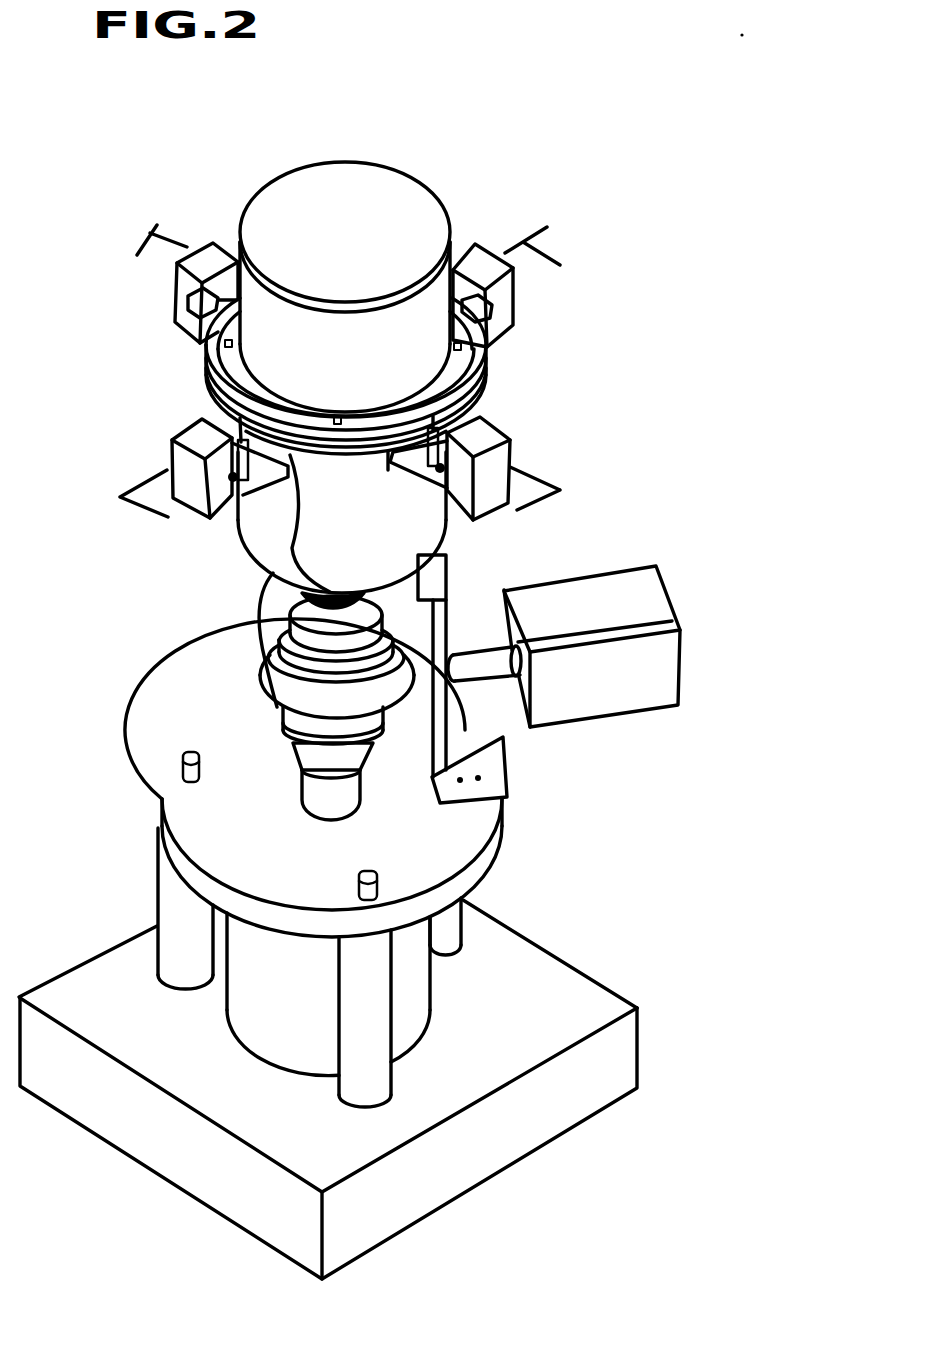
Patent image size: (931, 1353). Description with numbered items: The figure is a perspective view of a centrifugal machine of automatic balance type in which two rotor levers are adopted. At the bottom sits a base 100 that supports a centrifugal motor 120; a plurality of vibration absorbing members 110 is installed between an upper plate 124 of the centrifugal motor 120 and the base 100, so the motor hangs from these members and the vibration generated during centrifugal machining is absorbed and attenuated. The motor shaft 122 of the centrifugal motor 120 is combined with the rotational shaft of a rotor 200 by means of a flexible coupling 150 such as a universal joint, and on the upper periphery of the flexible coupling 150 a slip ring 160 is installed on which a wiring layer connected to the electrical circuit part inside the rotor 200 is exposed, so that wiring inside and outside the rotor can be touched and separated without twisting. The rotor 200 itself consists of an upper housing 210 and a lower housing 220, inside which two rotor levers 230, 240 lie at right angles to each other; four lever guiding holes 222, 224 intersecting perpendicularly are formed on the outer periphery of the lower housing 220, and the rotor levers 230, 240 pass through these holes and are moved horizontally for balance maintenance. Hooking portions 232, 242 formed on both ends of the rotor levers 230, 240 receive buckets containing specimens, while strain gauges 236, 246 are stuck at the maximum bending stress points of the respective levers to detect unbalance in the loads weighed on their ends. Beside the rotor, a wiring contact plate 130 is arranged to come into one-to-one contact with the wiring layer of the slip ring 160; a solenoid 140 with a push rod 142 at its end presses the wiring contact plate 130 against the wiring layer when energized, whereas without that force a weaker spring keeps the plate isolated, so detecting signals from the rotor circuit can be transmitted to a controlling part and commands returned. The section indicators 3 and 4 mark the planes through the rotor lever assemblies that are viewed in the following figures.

The base 100 is at (605, 994).
The vibration absorbing member 110 is at (173, 904).
The centrifugal motor 120 is at (427, 973).
The motor shaft 122 is at (355, 797).
The upper plate 124 is at (500, 843).
The wiring contact plate 130 is at (450, 575).
The solenoid 140 is at (642, 686).
The push rod 142 is at (485, 672).
The flexible coupling 150 is at (260, 676).
The slip ring 160 is at (268, 652).
The rotor 200 is at (252, 582).
The upper housing 210 is at (406, 187).
The lower housing 220 is at (262, 534).
The lever guiding hole 222 is at (463, 417).
The lever guiding hole 224 is at (320, 618).
The rotor lever 230 is at (512, 464).
The hooking portion 232 is at (452, 440).
The strain gauge 236 is at (505, 438).
The rotor lever 240 is at (184, 461).
The hooking portion 242 is at (247, 440).
The strain gauge 246 is at (267, 466).
The section line 3 is at (332, 385).
The section line 4 is at (355, 384).